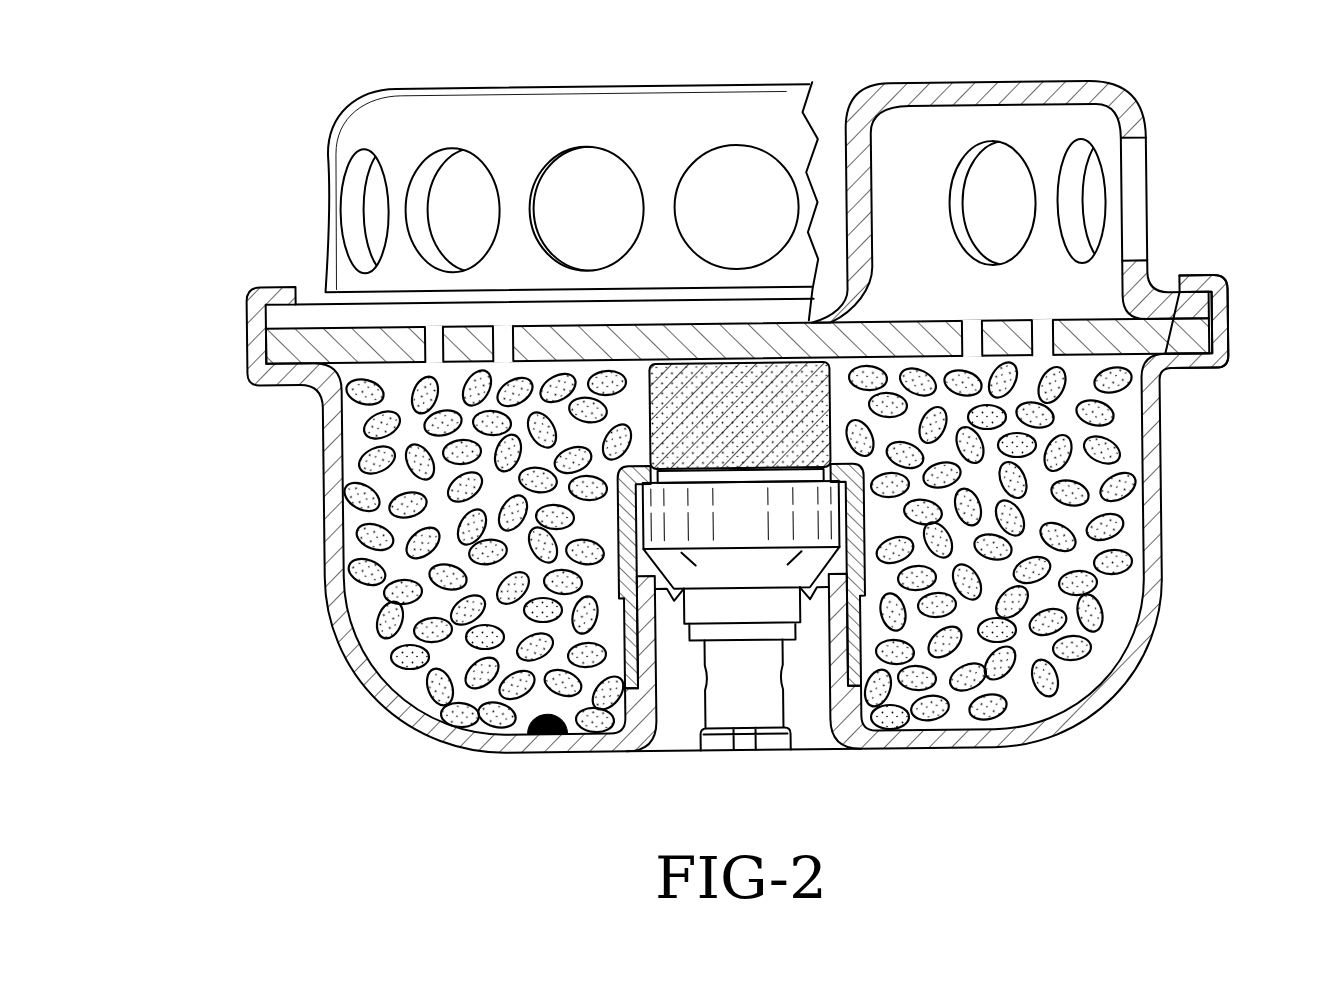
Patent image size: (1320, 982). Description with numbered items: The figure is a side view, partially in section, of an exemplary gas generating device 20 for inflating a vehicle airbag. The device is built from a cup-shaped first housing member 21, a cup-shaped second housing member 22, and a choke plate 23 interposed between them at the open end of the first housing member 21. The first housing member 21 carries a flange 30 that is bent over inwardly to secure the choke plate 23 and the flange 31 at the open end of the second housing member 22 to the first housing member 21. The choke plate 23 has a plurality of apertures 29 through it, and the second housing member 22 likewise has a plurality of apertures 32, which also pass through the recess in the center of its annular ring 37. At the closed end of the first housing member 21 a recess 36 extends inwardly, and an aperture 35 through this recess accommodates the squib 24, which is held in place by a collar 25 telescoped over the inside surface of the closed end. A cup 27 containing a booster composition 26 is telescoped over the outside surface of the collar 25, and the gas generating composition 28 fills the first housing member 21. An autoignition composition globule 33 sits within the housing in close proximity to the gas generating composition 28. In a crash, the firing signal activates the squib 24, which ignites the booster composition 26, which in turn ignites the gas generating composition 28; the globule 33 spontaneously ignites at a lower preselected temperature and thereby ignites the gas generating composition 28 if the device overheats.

The gas generating device 20 is at (214, 196).
The first housing member 21 is at (348, 633).
The second housing member 22 is at (1073, 80).
The choke plate 23 is at (302, 355).
The squib 24 is at (767, 695).
The collar 25 is at (855, 623).
The booster composition 26 is at (735, 443).
The cup 27 is at (617, 575).
The gas generating composition 28 is at (367, 571).
The apertures 29 is at (508, 350).
The flange 30 is at (1218, 310).
The flange 31 is at (1166, 292).
The apertures 32 is at (606, 229).
The autoignition composition globule 33 is at (548, 736).
The aperture 35 is at (683, 590).
The recess 36 is at (675, 688).
The annular ring 37 is at (833, 142).